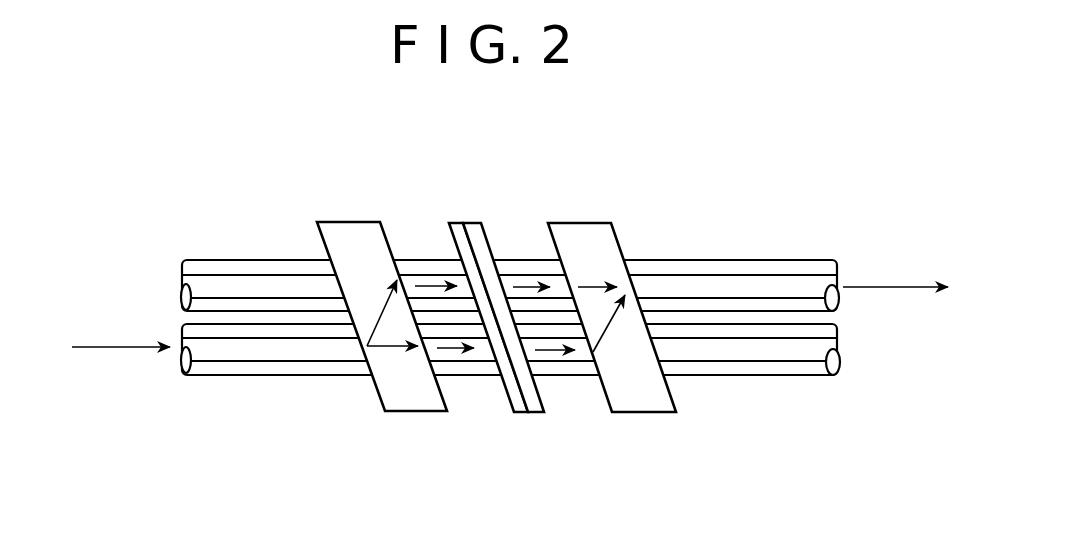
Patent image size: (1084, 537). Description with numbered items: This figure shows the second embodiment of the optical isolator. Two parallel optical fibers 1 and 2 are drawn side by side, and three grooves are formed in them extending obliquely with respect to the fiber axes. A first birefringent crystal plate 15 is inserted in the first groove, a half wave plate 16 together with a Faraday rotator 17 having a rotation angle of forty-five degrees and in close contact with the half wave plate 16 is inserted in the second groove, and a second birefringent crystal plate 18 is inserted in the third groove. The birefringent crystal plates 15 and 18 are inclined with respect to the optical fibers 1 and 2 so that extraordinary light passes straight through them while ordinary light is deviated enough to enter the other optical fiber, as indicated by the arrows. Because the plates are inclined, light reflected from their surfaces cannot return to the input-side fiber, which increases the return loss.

The optical fiber 1 is at (737, 378).
The optical fiber 2 is at (742, 260).
The first birefringent crystal plate 15 is at (348, 222).
The half wave plate 16 is at (452, 223).
The Faraday rotator 17 is at (475, 223).
The second birefringent crystal plate 18 is at (583, 223).